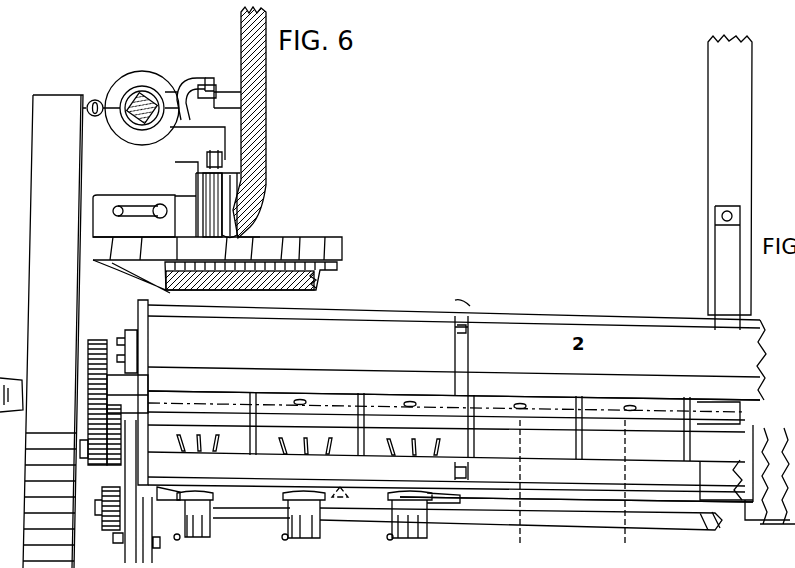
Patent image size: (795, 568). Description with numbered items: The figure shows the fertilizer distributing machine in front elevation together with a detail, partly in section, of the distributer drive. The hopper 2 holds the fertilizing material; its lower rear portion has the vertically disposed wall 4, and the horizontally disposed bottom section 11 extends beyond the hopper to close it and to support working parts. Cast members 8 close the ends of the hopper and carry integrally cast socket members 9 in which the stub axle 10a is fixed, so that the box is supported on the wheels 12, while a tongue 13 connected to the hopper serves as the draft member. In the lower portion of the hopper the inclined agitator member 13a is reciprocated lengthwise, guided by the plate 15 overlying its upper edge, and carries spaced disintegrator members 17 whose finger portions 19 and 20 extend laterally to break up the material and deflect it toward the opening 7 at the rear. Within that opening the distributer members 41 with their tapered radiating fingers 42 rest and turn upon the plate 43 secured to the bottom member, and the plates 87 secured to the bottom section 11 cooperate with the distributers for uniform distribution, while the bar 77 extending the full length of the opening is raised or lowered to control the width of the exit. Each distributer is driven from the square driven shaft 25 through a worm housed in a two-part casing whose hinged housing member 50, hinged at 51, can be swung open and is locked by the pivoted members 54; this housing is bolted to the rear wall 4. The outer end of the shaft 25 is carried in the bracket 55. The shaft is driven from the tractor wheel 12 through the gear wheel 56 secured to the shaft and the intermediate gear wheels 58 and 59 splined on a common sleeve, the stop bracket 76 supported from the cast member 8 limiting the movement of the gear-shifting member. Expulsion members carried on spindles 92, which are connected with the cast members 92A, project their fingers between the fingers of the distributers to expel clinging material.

In FIG. 2, the hopper 2 is at (457, 422).
In FIG. 6, the vertically disposed wall 4 is at (266, 122).
In FIG. 6, the opening 7 is at (244, 231).
In FIG. 2, the cast members 8 is at (147, 312).
In FIG. 6, the socket members 9 is at (150, 142).
In FIG. 2, the socket members 9 is at (125, 386).
In FIG. 2, the stub axle 10a is at (18, 361).
In FIG. 6, the bottom section 11 is at (322, 282).
In FIG. 2, the bottom section 11 is at (770, 528).
In FIG. 2, the wheels 12 is at (53, 331).
In FIG. 2, the tongue 13 is at (730, 182).
In FIG. 2, the agitator member 13a is at (712, 430).
In FIG. 2, the plate 15 is at (711, 404).
In FIG. 2, the disintegrator members 17 is at (486, 425).
In FIG. 2, the finger portions 19 is at (684, 447).
In FIG. 2, the finger portions 20 is at (694, 400).
In FIG. 2, the driven shaft 25 is at (465, 520).
In FIG. 6, the distributer members 41 is at (240, 228).
In FIG. 2, the distributer members 41 is at (222, 517).
In FIG. 6, the radiating fingers 42 is at (281, 250).
In FIG. 2, the radiating fingers 42 is at (452, 503).
In FIG. 2, the plate 43 is at (748, 512).
In FIG. 6, the housing member 50 is at (150, 70).
In FIG. 2, the housing member 50 is at (193, 540).
In FIG. 2, the hinge 51 is at (100, 338).
In FIG. 6, the pivoted members 54 is at (216, 88).
In FIG. 6, the bracket 55 is at (152, 110).
In FIG. 2, the gear wheel 56 is at (108, 532).
In FIG. 2, the intermediate gear wheel 58 is at (120, 446).
In FIG. 6, the intermediate gear wheel 59 is at (207, 80).
In FIG. 2, the intermediate gear wheel 59 is at (86, 460).
In FIG. 2, the stop bracket 76 is at (452, 565).
In FIG. 6, the bar 77 is at (262, 194).
In FIG. 6, the plates 87 is at (147, 272).
In FIG. 6, the spindles 92 is at (178, 205).
In FIG. 6, the cast members 92A is at (130, 206).